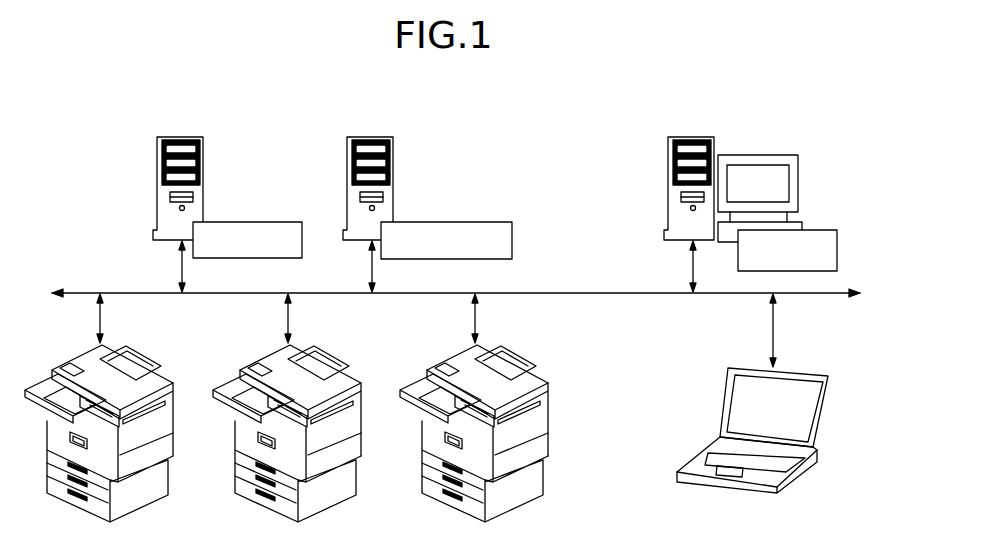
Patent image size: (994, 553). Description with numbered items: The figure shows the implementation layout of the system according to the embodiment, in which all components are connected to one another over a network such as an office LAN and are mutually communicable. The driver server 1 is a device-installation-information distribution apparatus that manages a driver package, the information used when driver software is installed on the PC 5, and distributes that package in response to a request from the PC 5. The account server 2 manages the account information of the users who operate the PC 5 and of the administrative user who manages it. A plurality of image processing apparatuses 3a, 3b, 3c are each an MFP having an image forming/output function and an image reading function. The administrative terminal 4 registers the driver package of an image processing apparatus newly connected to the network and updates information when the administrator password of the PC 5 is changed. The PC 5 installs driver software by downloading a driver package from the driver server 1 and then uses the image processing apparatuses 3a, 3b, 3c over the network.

The driver server 1 is at (192, 139).
The account server 2 is at (382, 139).
The image processing apparatus 3a is at (173, 379).
The image processing apparatus 3b is at (361, 379).
The image processing apparatus 3c is at (548, 379).
The administrative terminal 4 is at (793, 155).
The PC 5 is at (828, 376).